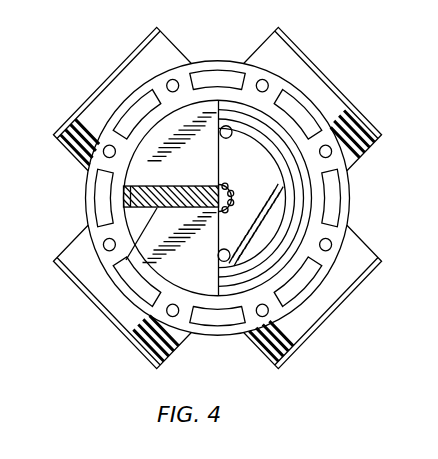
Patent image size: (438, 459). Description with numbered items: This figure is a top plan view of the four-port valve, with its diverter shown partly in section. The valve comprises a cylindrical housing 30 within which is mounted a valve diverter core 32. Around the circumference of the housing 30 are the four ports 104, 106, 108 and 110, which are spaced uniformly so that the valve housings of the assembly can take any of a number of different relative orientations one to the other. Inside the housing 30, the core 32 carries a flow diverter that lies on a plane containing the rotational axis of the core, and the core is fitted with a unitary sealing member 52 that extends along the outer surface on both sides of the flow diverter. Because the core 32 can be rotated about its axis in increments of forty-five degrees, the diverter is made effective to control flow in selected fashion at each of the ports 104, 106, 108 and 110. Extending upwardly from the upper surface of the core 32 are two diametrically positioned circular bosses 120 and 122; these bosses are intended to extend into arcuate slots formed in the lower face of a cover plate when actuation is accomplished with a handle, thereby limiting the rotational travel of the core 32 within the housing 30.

The cylindrical housing 30 is at (248, 198).
The valve diverter core 32 is at (171, 216).
The sealing member 52 is at (125, 183).
The port 104 is at (115, 98).
The port 106 is at (326, 98).
The port 108 is at (323, 296).
The port 110 is at (122, 305).
The circular boss 120 is at (215, 318).
The circular boss 122 is at (245, 74).